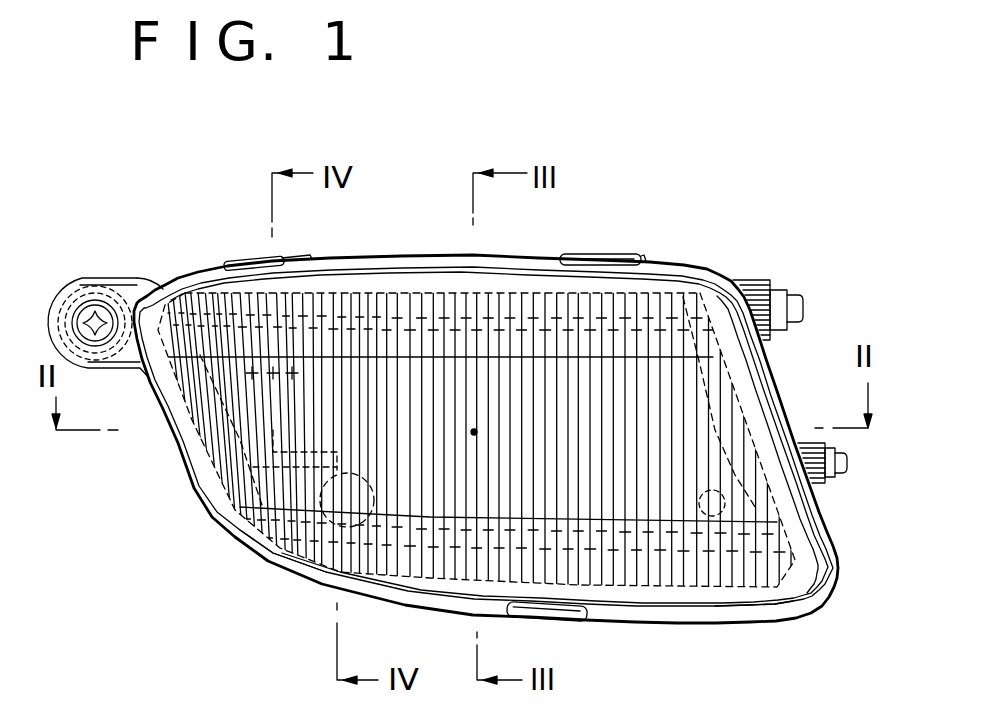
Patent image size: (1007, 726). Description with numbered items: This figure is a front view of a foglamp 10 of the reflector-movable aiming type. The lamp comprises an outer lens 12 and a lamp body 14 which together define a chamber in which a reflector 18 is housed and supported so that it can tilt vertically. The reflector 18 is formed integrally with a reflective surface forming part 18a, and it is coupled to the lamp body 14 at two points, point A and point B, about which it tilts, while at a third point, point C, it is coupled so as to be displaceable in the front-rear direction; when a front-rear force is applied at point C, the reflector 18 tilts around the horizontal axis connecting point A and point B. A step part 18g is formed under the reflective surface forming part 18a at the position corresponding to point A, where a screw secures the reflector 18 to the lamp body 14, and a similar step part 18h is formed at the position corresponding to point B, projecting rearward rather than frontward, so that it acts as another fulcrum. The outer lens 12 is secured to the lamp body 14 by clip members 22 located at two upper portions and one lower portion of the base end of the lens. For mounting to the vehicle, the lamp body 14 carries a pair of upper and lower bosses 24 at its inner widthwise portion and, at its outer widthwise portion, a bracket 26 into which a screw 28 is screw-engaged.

The foglamp 10 is at (676, 230).
The outer lens 12 is at (194, 503).
The lamp body 14 is at (846, 558).
The reflector 18 is at (654, 569).
The reflective surface forming part 18a is at (352, 300).
The step part 18g is at (249, 563).
The step part 18h is at (753, 593).
The clip member 22 is at (245, 259).
The boss 24 is at (803, 300).
The bracket 26 is at (60, 292).
The screw 28 is at (106, 312).
The point A is at (332, 502).
The point B is at (718, 503).
The point C is at (265, 378).